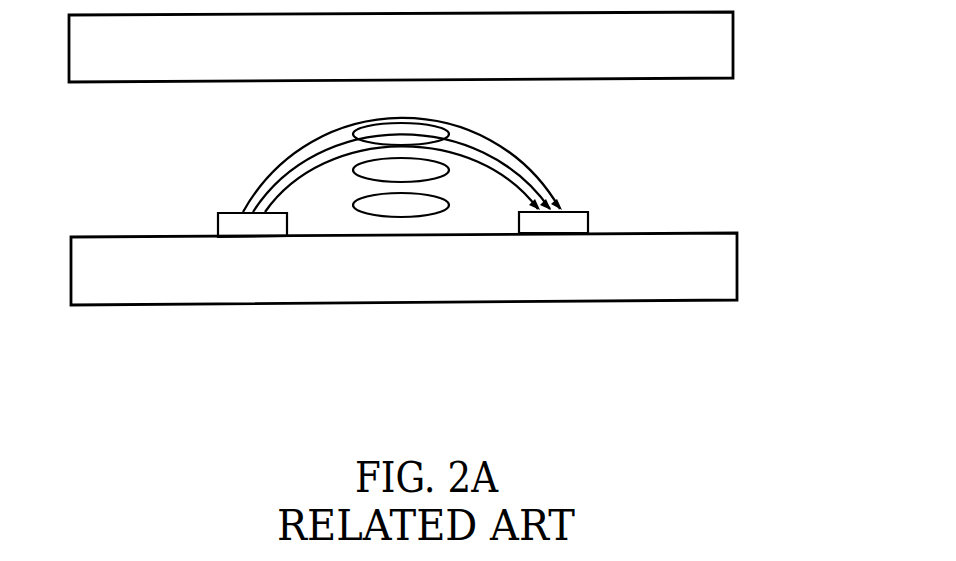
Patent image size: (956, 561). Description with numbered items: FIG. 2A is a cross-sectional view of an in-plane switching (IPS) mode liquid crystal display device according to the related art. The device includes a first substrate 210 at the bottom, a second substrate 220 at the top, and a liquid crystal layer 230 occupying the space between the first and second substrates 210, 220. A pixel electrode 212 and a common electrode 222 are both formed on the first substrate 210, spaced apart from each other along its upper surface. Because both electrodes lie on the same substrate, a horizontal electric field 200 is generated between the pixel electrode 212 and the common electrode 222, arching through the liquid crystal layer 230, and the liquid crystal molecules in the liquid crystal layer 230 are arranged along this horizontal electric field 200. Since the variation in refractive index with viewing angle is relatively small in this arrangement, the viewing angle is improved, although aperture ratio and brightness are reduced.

The horizontal electric field 200 is at (516, 149).
The first substrate 210 is at (717, 280).
The pixel electrode 212 is at (247, 227).
The second substrate 220 is at (713, 58).
The common electrode 222 is at (558, 223).
The liquid crystal layer 230 is at (747, 78).